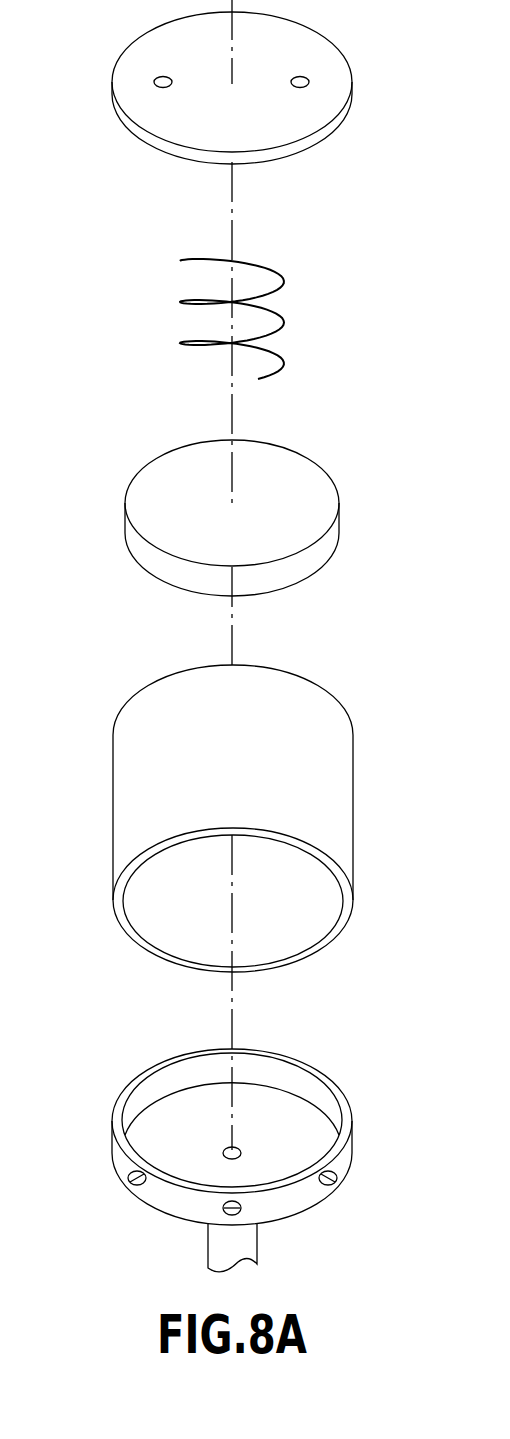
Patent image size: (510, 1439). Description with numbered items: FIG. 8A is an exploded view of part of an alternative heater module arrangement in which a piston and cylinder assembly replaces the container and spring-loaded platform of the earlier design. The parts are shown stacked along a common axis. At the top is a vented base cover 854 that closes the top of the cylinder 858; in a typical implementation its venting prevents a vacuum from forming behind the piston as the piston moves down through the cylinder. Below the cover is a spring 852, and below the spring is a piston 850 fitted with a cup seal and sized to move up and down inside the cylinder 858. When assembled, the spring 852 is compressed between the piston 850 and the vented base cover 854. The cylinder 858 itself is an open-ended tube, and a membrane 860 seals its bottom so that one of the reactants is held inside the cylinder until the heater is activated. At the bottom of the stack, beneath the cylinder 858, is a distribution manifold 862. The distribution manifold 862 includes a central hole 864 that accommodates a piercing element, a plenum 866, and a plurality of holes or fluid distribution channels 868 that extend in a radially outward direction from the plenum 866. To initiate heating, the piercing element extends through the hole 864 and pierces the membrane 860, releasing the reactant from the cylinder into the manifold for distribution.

The piston 850 is at (327, 472).
The spring 852 is at (283, 278).
The vented base cover 854 is at (348, 58).
The cylinder 858 is at (277, 825).
The membrane 860 is at (322, 913).
The distribution manifold 862 is at (242, 1149).
The hole 864 is at (235, 1146).
The plenum 866 is at (150, 1090).
The holes (fluid distribution channels) 868 is at (130, 1180).